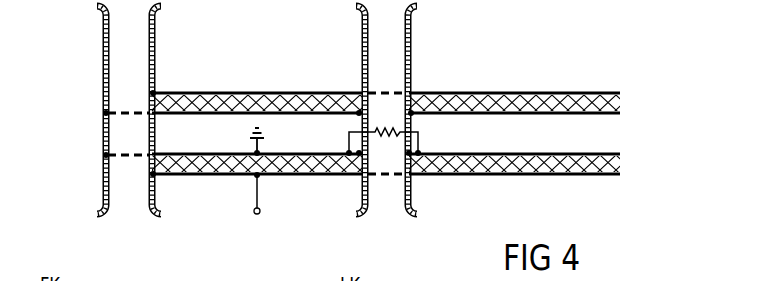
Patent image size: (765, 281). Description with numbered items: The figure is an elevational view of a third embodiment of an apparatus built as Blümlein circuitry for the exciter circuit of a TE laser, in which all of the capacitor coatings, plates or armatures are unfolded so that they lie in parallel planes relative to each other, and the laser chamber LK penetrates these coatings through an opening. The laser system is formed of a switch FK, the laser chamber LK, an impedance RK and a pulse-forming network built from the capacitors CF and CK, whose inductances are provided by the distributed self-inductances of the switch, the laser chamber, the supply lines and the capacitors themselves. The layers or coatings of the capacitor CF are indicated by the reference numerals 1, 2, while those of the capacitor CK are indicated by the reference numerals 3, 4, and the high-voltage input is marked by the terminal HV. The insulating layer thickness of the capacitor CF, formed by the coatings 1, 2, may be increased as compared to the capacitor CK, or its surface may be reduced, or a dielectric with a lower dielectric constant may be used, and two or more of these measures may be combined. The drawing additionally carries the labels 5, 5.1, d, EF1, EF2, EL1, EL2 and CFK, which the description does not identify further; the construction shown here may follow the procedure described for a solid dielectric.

The capacitor coating 1 is at (185, 153).
The capacitor coating 2 is at (254, 93).
The capacitor coating 3 is at (473, 93).
The capacitor coating 4 is at (463, 153).
The dielectric layers of capacitor CK 5 is at (573, 93).
The connecting lines 5.1 is at (396, 93).
The dielectric thickness d is at (538, 93).
The filter electrode 1 EF1 is at (102, 25).
The filter electrode 2 EF2 is at (155, 25).
The lens electrode 1 EL1 is at (362, 30).
The lens electrode 2 EL2 is at (412, 36).
The capacitor CF is at (257, 139).
The capacitor CK is at (526, 139).
The filter-coupling capacitance CFK is at (659, 141).
The impedance RK is at (383, 149).
The high-voltage input terminal HV is at (257, 210).
The switch FK is at (130, 232).
The laser chamber LK is at (387, 232).